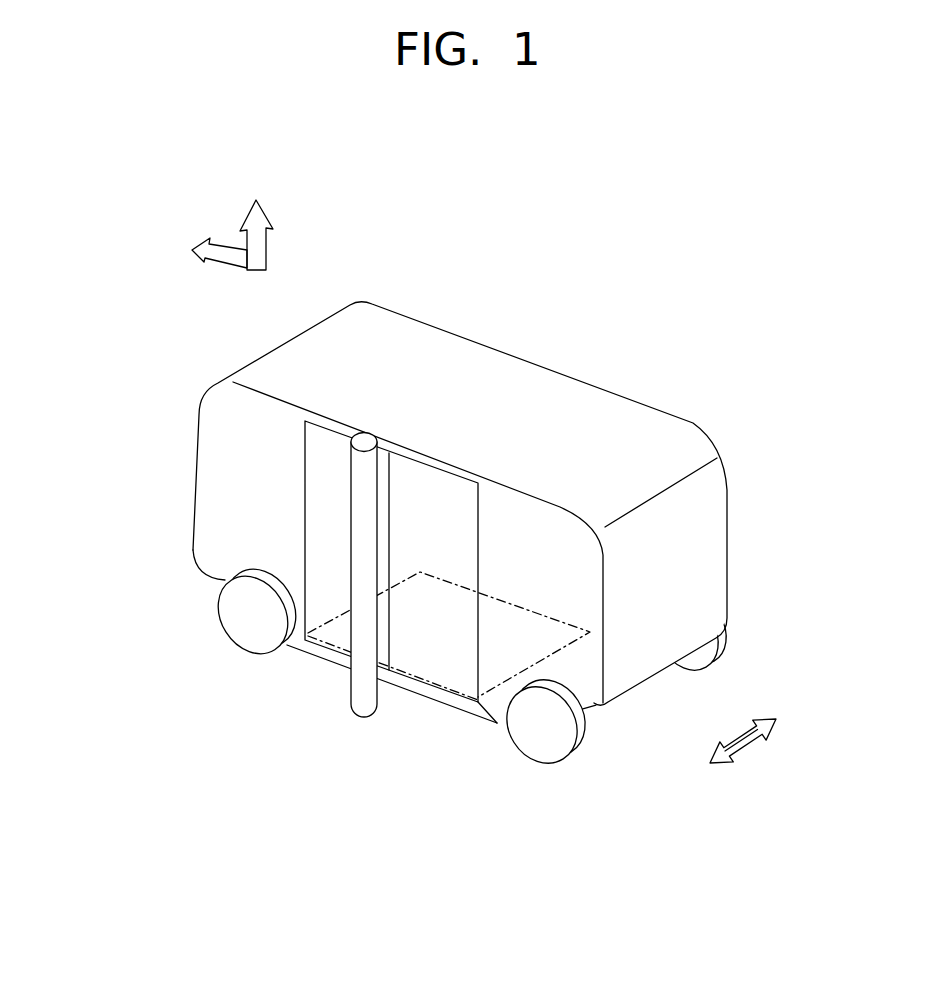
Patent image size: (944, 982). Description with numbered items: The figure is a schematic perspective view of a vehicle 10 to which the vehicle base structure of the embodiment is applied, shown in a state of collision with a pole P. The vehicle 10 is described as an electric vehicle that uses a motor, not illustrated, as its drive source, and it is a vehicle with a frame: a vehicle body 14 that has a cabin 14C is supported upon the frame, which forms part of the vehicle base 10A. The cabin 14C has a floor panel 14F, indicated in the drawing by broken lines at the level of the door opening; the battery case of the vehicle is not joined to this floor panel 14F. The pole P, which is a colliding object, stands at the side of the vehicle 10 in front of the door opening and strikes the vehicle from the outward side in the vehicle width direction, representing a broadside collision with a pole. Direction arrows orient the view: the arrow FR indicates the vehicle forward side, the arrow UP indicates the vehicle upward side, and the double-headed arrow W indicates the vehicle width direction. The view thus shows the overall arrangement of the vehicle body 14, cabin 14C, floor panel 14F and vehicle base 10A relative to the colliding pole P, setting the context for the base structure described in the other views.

The vehicle 10 is at (675, 360).
The vehicle body 14 is at (665, 443).
The floor panel 14F is at (503, 618).
The cabin 14C is at (502, 647).
The vehicle base 10A is at (415, 703).
The pole P is at (348, 641).
The arrow W is at (737, 734).
The arrow UP is at (258, 218).
The arrow FR is at (195, 244).